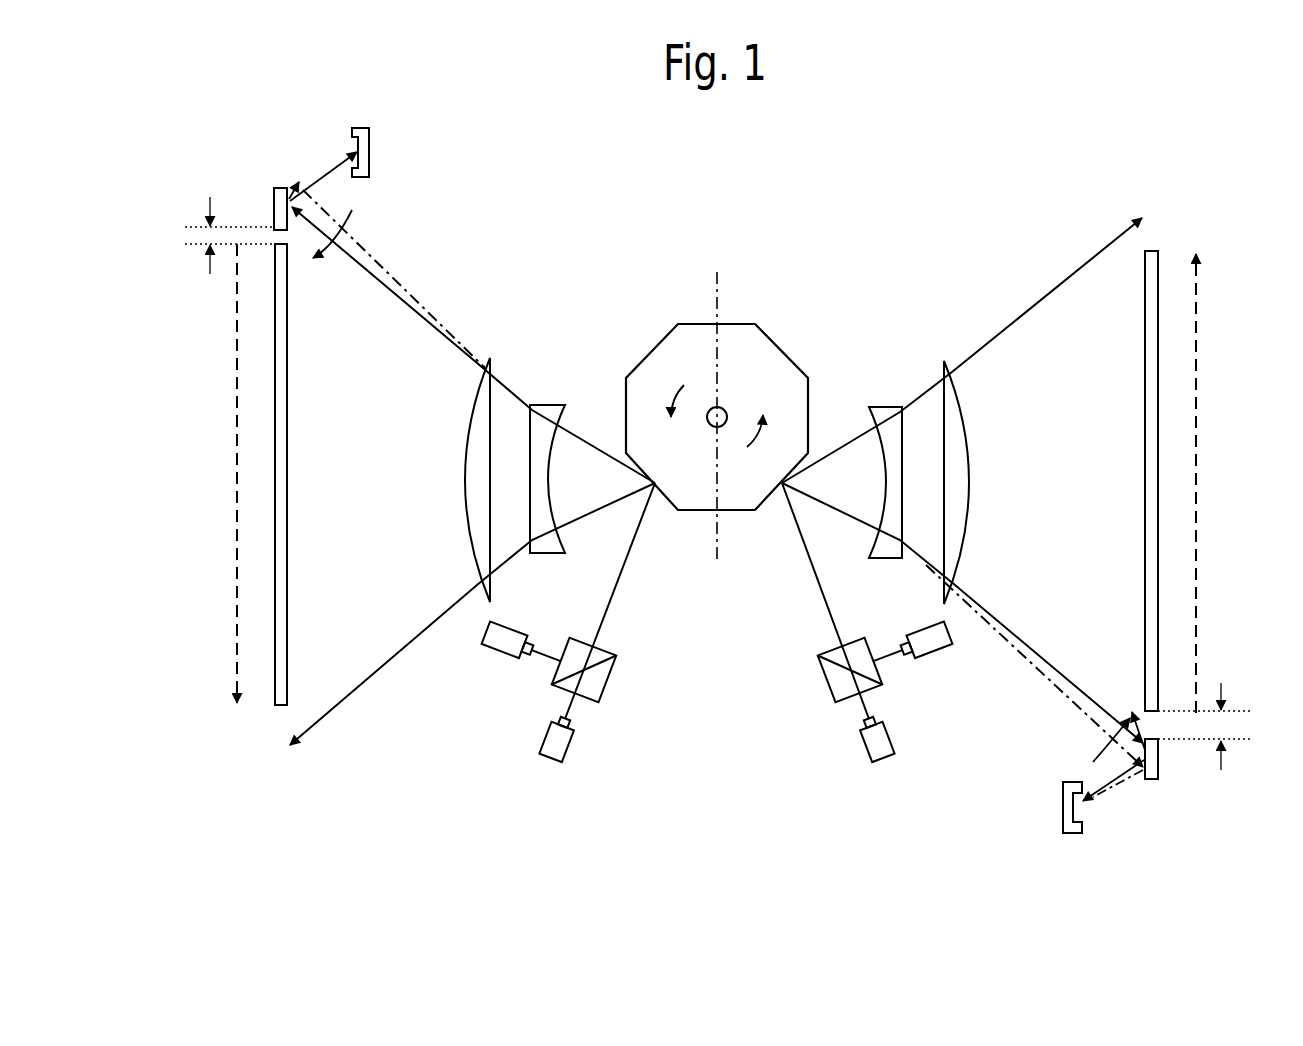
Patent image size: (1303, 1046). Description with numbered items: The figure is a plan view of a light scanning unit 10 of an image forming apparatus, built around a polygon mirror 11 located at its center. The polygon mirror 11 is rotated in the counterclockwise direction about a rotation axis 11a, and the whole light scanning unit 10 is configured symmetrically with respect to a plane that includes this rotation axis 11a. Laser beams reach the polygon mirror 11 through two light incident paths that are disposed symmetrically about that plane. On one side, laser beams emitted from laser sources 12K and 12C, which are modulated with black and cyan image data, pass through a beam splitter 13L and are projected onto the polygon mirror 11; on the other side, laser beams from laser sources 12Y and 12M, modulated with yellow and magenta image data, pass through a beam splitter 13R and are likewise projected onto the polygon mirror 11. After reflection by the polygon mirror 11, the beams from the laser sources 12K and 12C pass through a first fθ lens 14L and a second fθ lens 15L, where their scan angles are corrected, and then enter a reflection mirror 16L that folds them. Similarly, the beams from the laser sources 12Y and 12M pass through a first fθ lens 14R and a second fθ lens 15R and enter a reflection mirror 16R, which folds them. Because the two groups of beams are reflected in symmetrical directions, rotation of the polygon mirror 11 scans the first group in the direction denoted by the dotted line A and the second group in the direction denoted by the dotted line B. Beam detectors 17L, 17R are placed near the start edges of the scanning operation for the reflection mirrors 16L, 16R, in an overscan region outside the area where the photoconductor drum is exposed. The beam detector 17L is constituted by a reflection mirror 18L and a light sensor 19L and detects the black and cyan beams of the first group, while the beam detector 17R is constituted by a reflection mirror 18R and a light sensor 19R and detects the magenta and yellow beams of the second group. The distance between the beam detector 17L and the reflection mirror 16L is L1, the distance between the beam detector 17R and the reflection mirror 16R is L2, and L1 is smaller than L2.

The light scanning unit 10 is at (727, 215).
The polygon mirror 11 is at (748, 326).
The rotation axis 11a is at (710, 410).
The laser source 12K is at (510, 660).
The laser source 12C is at (560, 758).
The laser source 12Y is at (922, 652).
The laser source 12M is at (872, 758).
The beam splitter 13L is at (600, 680).
The beam splitter 13R is at (835, 682).
The first fθ lens 14L is at (548, 415).
The first fθ lens 14R is at (885, 412).
The second fθ lens 15L is at (483, 382).
The second fθ lens 15R is at (945, 376).
The reflection mirror 16L is at (288, 438).
The reflection mirror 16R is at (1145, 420).
The beam detector 17L is at (300, 162).
The beam detector 17R is at (1120, 795).
The reflection mirror 18L is at (273, 198).
The reflection mirror 18R is at (1158, 770).
The light sensor 19L is at (370, 143).
The light sensor 19R is at (1063, 818).
The scanning direction A is at (237, 548).
The scanning direction B is at (1197, 488).
The distance L1 is at (212, 235).
The distance L2 is at (1220, 726).